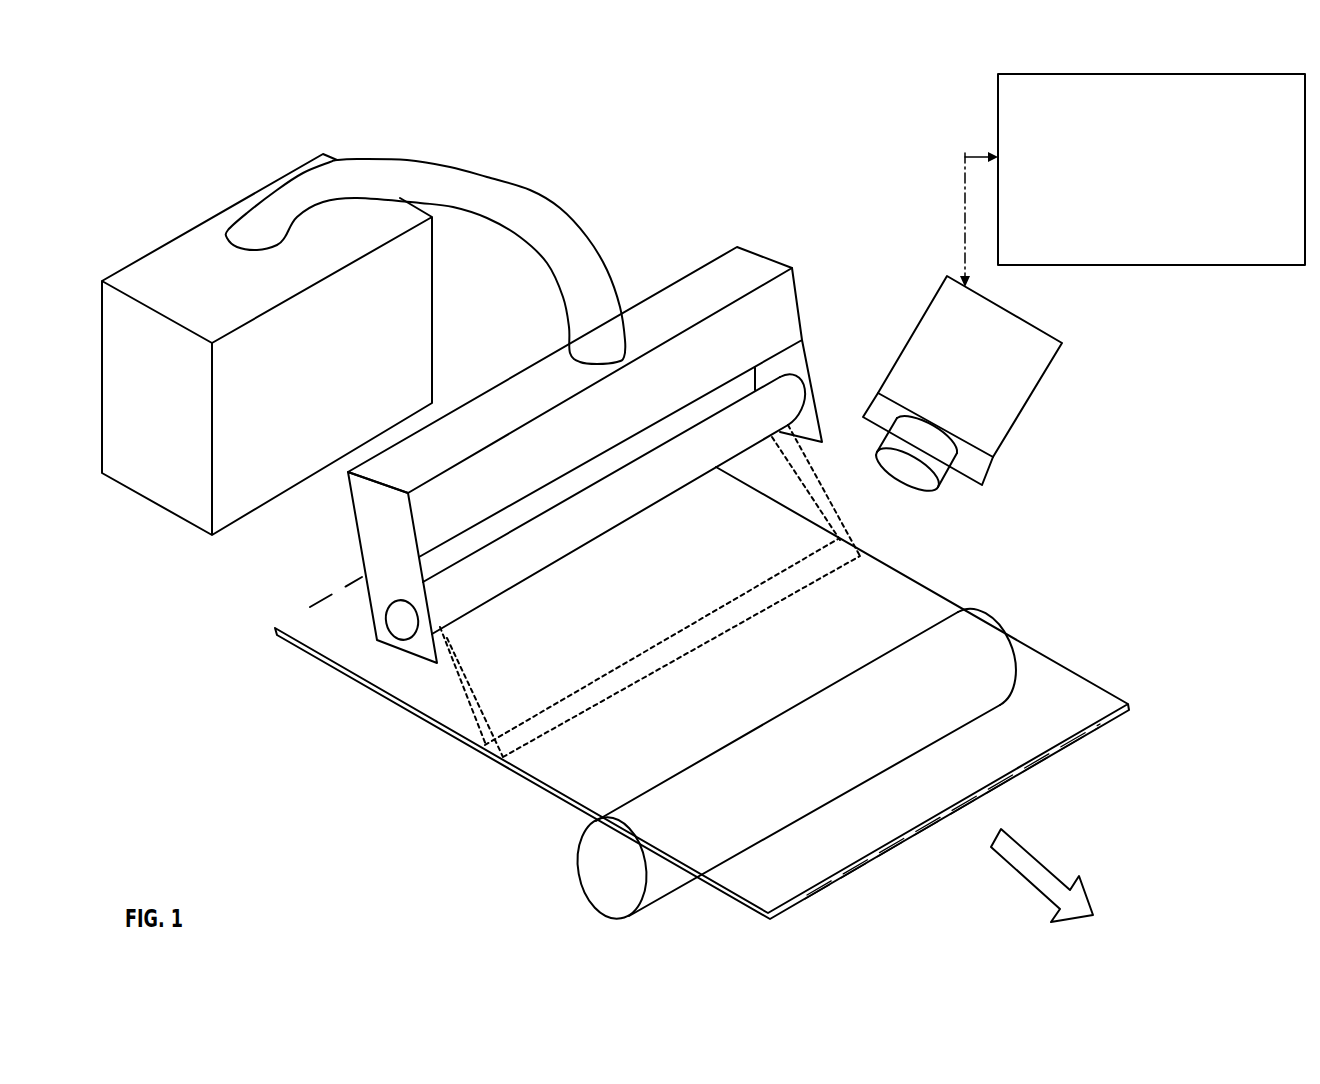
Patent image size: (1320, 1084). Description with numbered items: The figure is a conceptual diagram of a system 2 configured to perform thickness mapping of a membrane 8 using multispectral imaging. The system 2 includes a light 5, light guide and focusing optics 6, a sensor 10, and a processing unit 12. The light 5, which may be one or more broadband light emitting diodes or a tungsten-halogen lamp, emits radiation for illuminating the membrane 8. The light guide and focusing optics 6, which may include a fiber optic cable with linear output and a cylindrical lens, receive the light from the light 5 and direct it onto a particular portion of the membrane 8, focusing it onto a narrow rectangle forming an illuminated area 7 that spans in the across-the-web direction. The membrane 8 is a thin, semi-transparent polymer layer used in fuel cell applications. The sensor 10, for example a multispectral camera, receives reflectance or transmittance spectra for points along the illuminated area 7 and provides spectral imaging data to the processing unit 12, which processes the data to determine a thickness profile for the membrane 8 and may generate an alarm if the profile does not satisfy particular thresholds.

The system 2 is at (178, 110).
The light 5 is at (183, 232).
The light guide and focusing optics 6 is at (563, 207).
The illuminated area 7 is at (617, 655).
The membrane 8 is at (370, 688).
The sensor 10 is at (1055, 335).
The processing unit 12 is at (1139, 193).